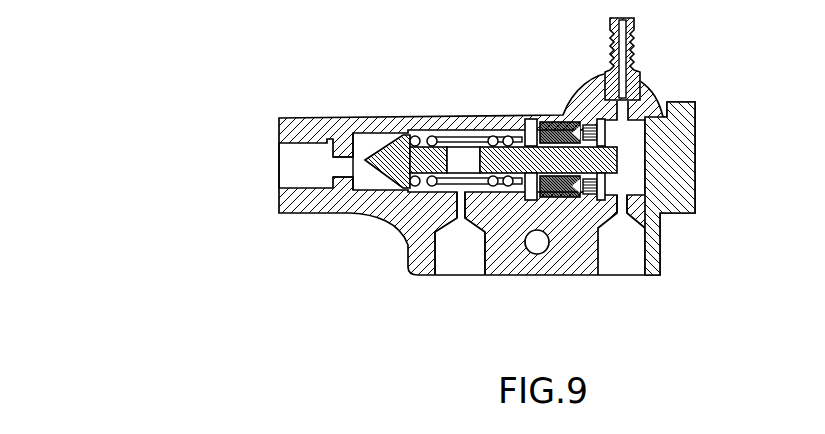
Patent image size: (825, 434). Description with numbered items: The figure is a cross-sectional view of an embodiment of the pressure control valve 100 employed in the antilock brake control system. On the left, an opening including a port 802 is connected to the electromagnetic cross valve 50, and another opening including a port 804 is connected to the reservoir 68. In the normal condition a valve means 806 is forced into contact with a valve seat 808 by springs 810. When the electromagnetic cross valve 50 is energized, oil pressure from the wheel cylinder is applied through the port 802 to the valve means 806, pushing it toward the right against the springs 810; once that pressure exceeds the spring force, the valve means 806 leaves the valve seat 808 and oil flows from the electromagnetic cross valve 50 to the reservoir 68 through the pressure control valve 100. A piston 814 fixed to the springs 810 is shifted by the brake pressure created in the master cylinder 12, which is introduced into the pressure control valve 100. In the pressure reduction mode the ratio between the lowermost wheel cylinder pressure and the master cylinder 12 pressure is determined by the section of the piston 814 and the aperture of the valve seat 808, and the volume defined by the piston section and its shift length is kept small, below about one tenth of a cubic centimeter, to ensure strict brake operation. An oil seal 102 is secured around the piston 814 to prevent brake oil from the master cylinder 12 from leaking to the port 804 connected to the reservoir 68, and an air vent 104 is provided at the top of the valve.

The pressure control valve 100 is at (730, 96).
The air vent 104 is at (633, 25).
The oil seal 102 is at (557, 124).
The port 802 is at (341, 162).
The port 804 is at (484, 250).
The valve means 806 is at (356, 196).
The valve seat 808 is at (375, 133).
The springs 810 is at (438, 130).
The piston 814 is at (520, 140).
The electromagnetic cross valve 50 is at (300, 168).
The reservoir 68 is at (459, 257).
The master cylinder 12 is at (623, 244).